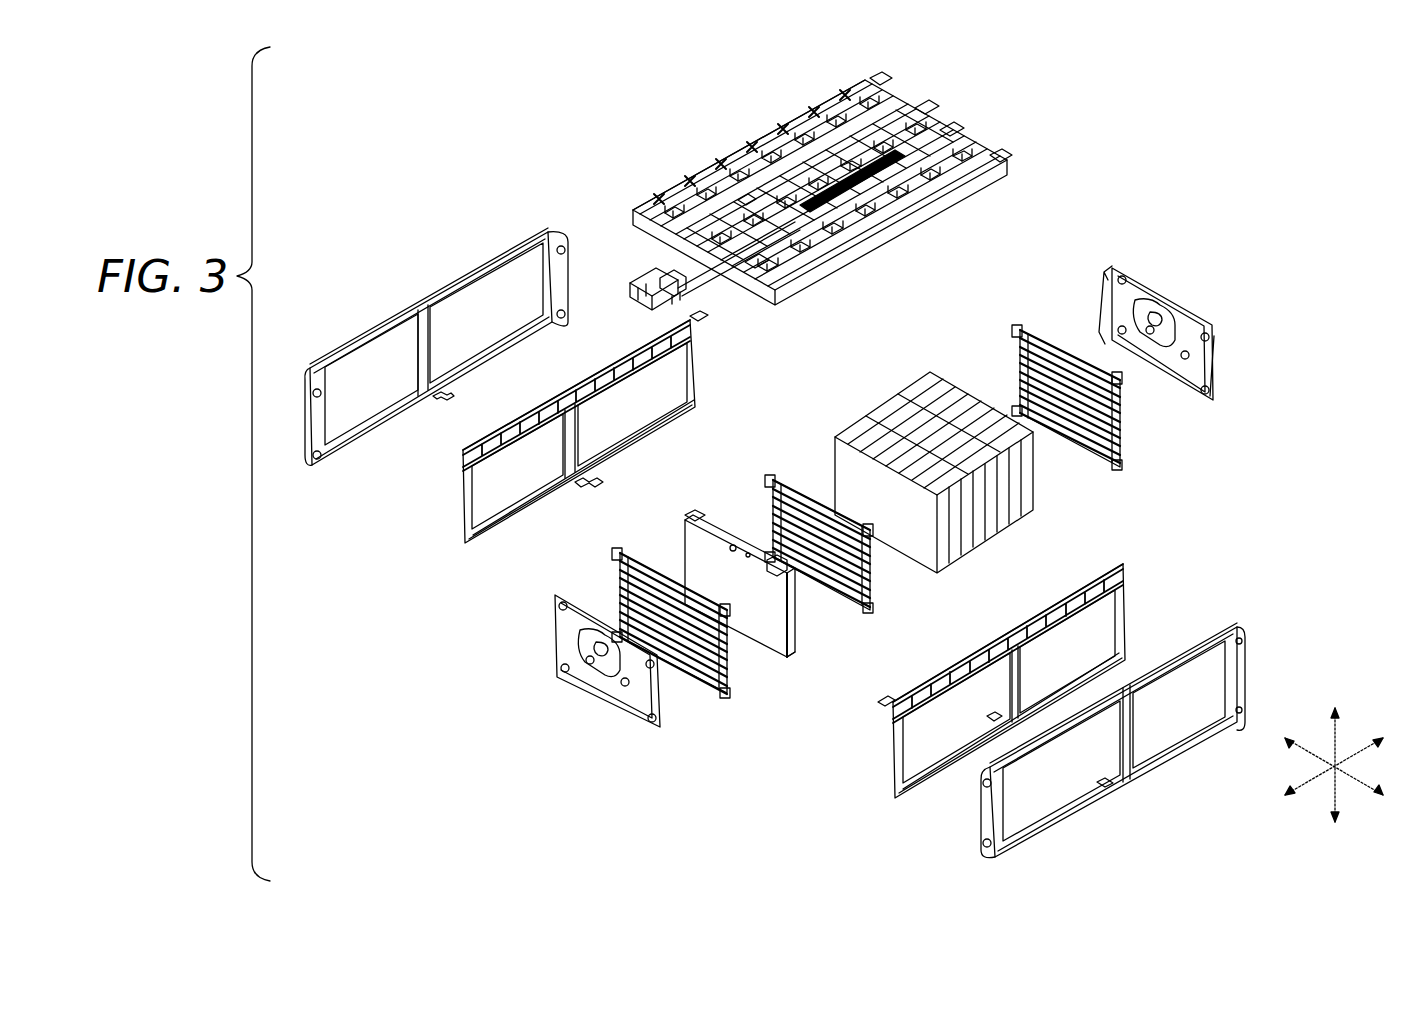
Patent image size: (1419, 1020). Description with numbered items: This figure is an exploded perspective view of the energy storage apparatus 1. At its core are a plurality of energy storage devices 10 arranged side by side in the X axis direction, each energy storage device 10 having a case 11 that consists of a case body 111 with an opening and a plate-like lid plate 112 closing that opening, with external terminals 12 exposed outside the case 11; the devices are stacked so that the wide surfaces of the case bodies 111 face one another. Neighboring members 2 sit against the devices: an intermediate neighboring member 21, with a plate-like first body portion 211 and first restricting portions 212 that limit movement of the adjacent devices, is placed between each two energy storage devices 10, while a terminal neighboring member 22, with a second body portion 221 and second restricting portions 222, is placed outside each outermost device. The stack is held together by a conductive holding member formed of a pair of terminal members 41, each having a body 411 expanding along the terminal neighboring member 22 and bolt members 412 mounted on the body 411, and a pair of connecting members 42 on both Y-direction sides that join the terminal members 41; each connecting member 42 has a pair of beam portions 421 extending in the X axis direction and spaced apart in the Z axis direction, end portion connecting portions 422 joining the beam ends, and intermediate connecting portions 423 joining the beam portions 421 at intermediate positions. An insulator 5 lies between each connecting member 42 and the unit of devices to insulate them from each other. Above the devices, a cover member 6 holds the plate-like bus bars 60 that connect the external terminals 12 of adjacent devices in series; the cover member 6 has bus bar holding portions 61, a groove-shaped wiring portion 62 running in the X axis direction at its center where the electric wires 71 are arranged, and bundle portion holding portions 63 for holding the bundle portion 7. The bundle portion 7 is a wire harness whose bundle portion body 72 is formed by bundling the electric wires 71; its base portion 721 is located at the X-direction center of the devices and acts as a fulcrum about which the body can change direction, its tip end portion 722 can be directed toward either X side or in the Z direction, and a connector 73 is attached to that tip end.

The energy storage apparatus 1 is at (526, 166).
The neighboring member 2 is at (845, 503).
The intermediate neighboring member 21 is at (795, 488).
The first body portion 211 is at (775, 503).
The first restricting portion 212 is at (770, 478).
The terminal neighboring member 22 is at (1025, 320).
The second body portion 221 is at (1078, 452).
The second restricting portion 222 is at (1017, 328).
The terminal member 41 is at (1215, 310).
The body 411 is at (1138, 352).
The bolt member 412 is at (1170, 300).
The connecting member 42 is at (326, 352).
The beam portion 421 is at (487, 288).
The end portion connecting portion 422 is at (574, 268).
The intermediate connecting portion 423 is at (423, 320).
The insulator 5 is at (455, 462).
The cover member 6 is at (875, 285).
The bus bar 60 is at (828, 98).
The bus bar holding portion 61 is at (885, 82).
The wiring portion 62 is at (926, 110).
The bundle portion holding portion 63 is at (950, 133).
The bundle portion 7 is at (686, 132).
The electric wire 71 is at (803, 195).
The bundle portion body 72 is at (685, 280).
The base portion 721 is at (745, 205).
The tip end portion 722 is at (683, 283).
The connector 73 is at (640, 270).
The energy storage device 10 is at (670, 528).
The case 11 is at (876, 640).
The case body 111 is at (795, 628).
The lid plate 112 is at (790, 595).
The external terminal 12 is at (690, 518).